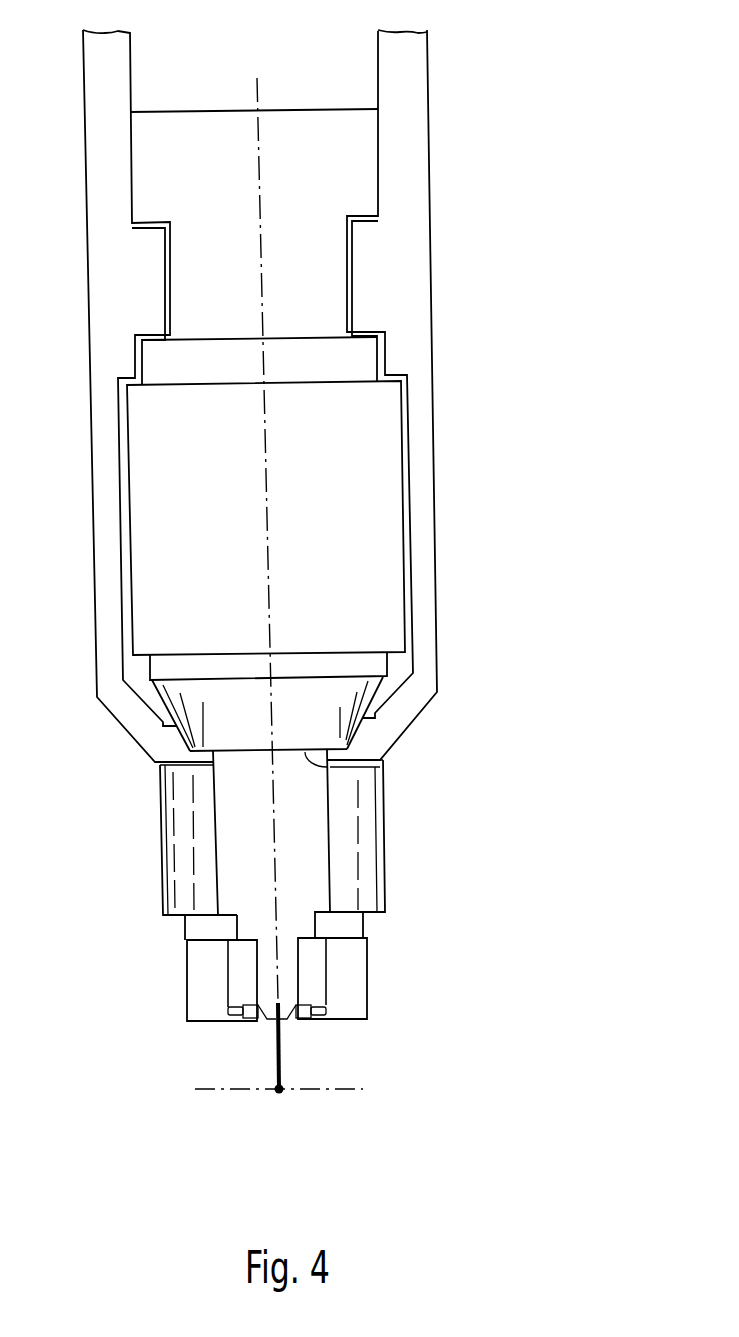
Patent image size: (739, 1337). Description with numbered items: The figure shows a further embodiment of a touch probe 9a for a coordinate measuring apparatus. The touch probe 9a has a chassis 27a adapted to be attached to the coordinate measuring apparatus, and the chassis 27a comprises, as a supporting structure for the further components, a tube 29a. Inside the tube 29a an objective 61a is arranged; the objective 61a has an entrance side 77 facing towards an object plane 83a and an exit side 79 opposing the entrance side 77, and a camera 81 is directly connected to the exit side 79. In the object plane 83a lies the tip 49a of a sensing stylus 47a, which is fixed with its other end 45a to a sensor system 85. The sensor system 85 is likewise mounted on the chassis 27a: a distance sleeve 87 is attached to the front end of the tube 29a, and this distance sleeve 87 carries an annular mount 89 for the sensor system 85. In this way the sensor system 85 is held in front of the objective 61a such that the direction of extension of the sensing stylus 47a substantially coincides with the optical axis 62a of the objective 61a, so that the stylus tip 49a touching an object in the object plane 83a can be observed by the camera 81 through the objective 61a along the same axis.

The touch probe 9a is at (534, 141).
The chassis 27a is at (440, 337).
The tube 29a is at (436, 423).
The camera 81 is at (178, 112).
The exit side 79 is at (202, 338).
The objective 61a is at (403, 492).
The optical axis 62a is at (273, 867).
The entrance side 77 is at (380, 766).
The distance sleeve 87 is at (160, 873).
The annular mount 89 is at (185, 967).
The other end 45a is at (273, 1020).
The sensor system 85 is at (292, 994).
The sensing stylus 47a is at (279, 1073).
The tip 49a is at (280, 1092).
The object plane 83a is at (353, 1090).